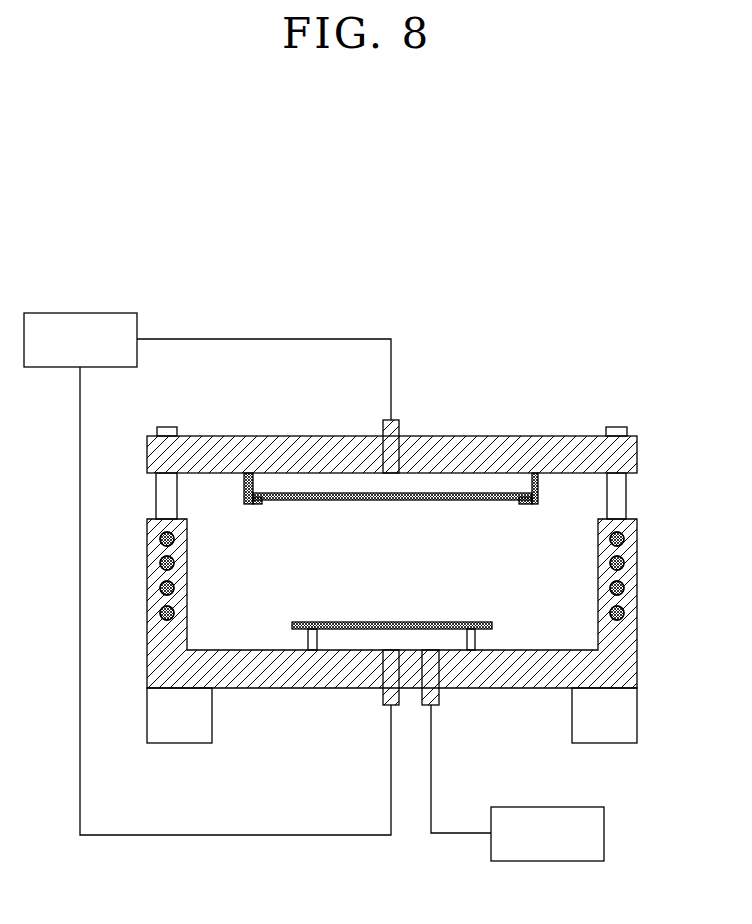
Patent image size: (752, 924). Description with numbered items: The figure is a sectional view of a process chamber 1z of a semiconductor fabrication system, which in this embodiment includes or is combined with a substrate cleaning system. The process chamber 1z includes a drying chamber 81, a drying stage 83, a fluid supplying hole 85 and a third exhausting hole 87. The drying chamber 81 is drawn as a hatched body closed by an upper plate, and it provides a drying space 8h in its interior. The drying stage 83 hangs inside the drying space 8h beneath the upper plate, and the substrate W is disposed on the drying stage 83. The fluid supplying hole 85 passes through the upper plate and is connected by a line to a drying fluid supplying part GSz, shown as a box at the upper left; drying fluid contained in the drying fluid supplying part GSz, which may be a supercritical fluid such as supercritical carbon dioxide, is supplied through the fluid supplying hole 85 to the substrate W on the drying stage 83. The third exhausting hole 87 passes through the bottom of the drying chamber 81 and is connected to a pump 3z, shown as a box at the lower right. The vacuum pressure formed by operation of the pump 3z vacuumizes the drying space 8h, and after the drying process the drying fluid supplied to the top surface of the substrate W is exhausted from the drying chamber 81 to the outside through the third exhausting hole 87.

The process chamber 1z is at (640, 454).
The drying chamber 81 is at (626, 660).
The drying stage 83 is at (538, 484).
The fluid supplying hole 85 is at (399, 432).
The third exhausting hole 87 is at (439, 700).
The drying space 8h is at (557, 563).
The substrate W is at (357, 508).
The drying fluid supplying part GSz is at (97, 313).
The pump 3z is at (604, 832).